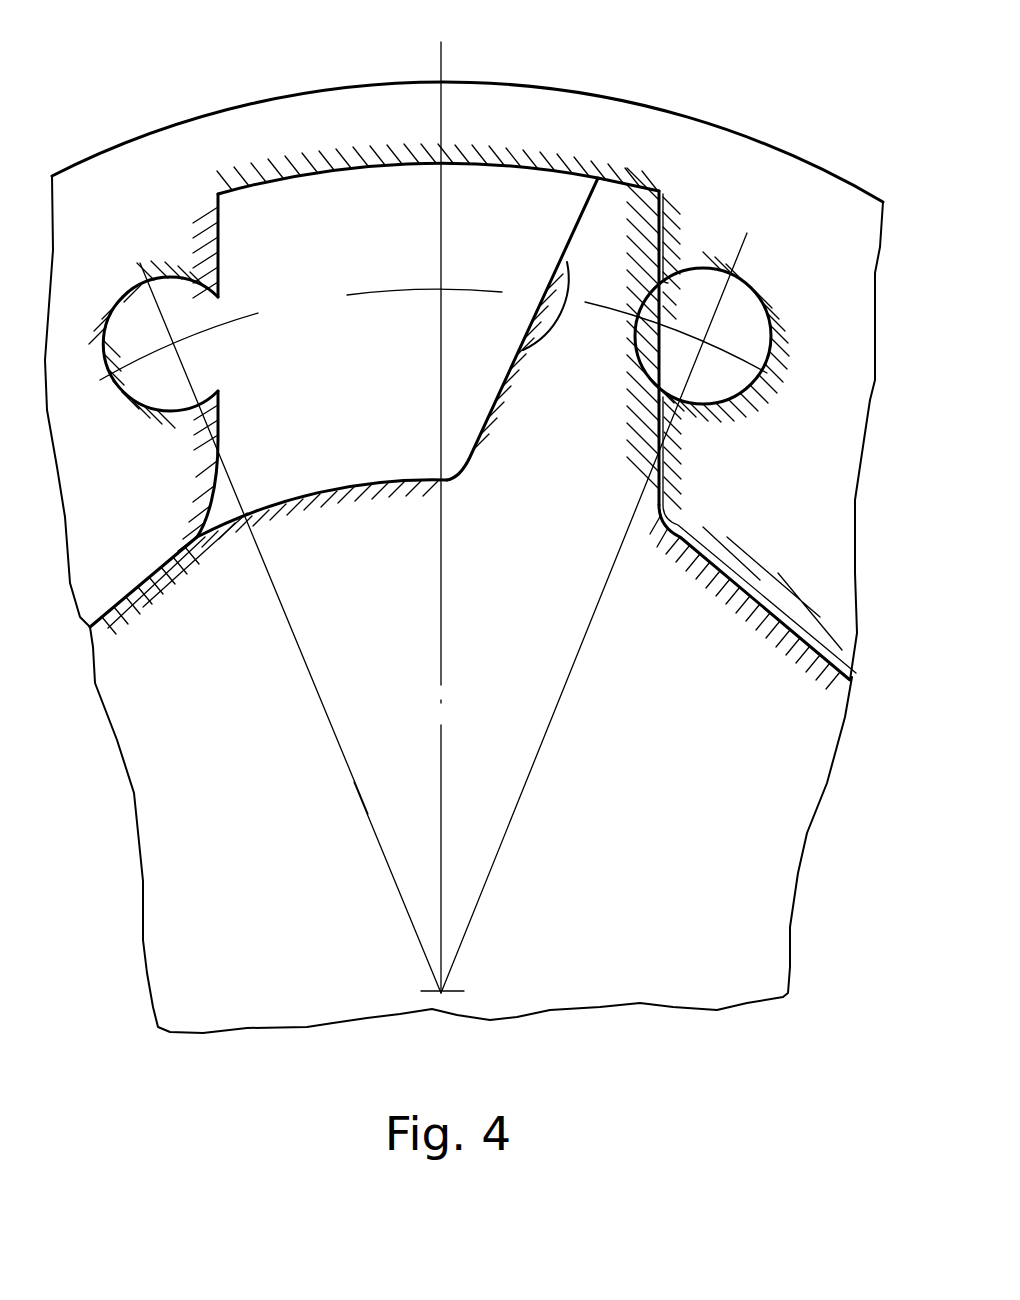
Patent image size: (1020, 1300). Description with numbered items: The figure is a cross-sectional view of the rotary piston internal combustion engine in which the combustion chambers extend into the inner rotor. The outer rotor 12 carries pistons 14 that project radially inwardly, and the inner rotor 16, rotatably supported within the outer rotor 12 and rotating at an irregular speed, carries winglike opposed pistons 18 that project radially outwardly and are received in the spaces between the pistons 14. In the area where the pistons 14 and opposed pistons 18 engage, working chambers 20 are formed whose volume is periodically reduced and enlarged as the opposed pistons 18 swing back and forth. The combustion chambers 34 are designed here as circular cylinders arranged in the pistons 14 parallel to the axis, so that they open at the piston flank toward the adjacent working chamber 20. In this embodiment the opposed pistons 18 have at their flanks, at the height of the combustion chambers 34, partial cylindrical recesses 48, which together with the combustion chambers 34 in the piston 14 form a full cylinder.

The outer rotor 12 is at (837, 230).
The piston 14 is at (643, 500).
The inner rotor 16 is at (700, 677).
The opposed piston 18 is at (621, 230).
The working chamber 20 is at (532, 205).
The combustion chamber 34 is at (187, 327).
The partial cylindrical recess 48 is at (547, 323).